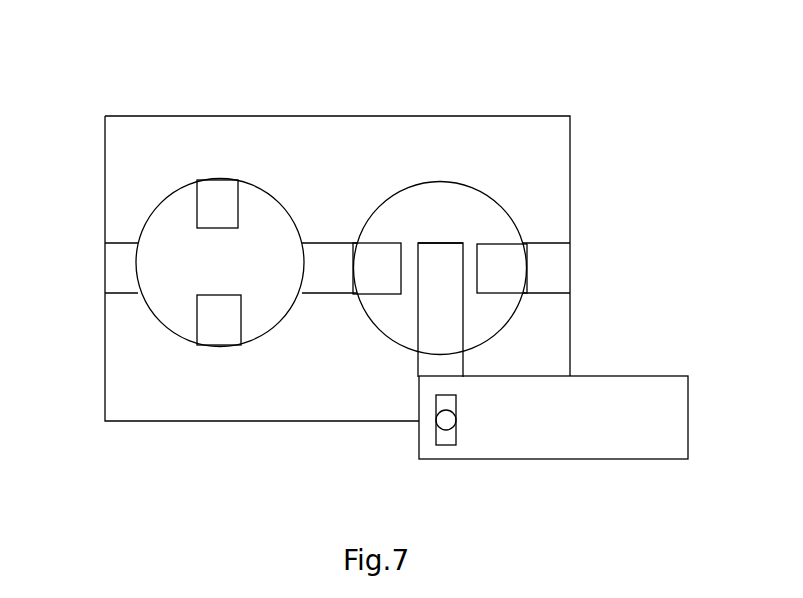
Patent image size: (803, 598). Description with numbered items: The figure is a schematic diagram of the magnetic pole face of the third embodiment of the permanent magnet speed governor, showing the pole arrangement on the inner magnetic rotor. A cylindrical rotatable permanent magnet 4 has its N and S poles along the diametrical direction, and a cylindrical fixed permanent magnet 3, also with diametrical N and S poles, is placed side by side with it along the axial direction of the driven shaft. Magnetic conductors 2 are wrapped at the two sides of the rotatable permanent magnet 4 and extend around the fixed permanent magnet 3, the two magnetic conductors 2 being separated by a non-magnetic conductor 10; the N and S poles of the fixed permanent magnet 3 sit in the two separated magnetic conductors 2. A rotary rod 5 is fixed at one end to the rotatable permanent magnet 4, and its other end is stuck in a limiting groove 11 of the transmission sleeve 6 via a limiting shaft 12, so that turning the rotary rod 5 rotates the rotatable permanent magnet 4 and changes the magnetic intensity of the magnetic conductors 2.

The magnetic conductor 2 is at (117, 357).
The fixed permanent magnet 3 is at (178, 338).
The rotatable permanent magnet 4 is at (385, 337).
The rotary rod 5 is at (463, 313).
The transmission sleeve 6 is at (640, 427).
The non-magnetic conductor 10 is at (548, 243).
The limiting groove 11 is at (436, 445).
The limiting shaft 12 is at (445, 418).